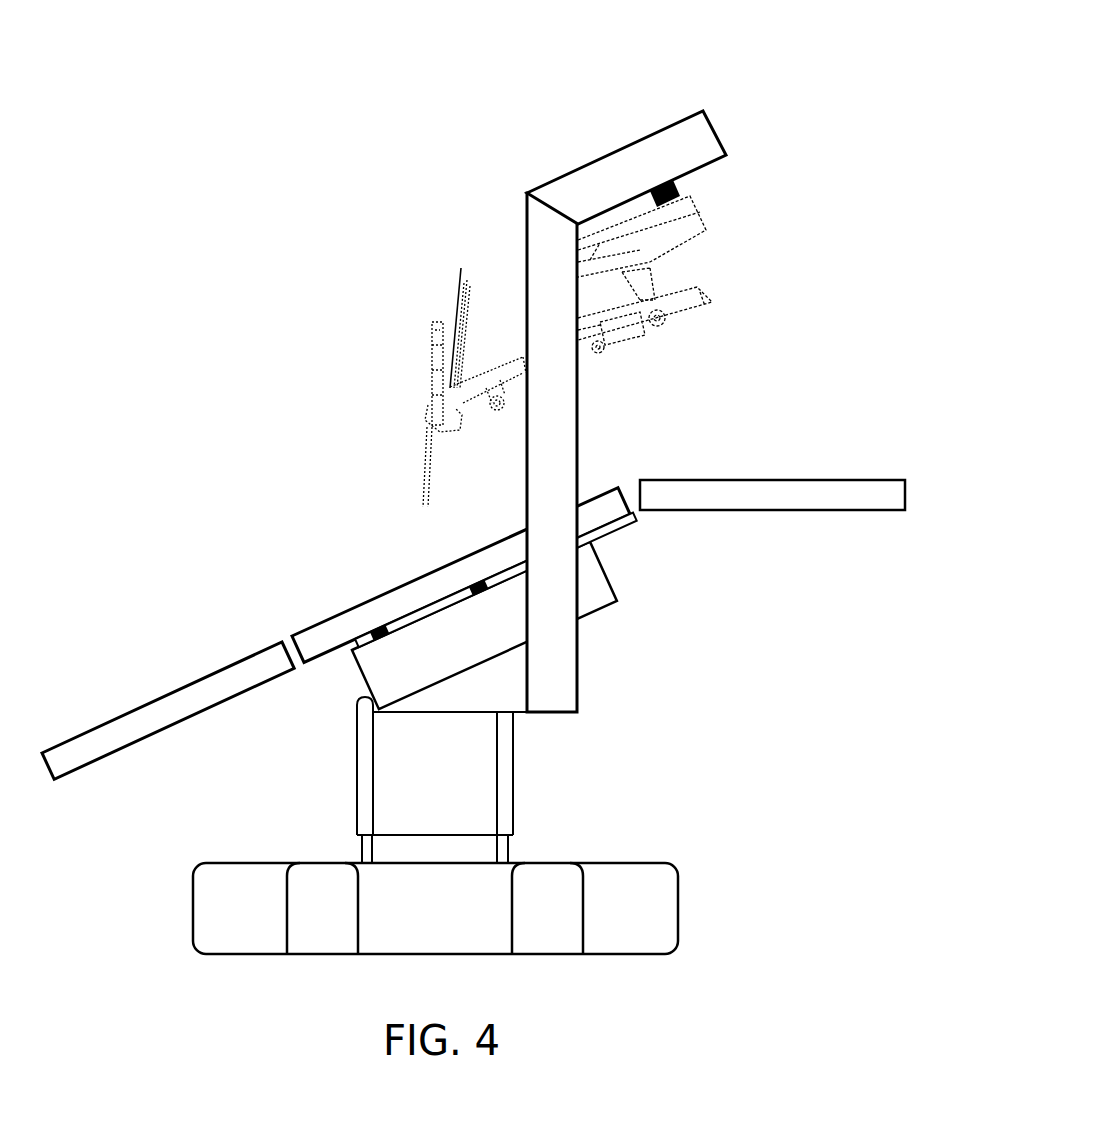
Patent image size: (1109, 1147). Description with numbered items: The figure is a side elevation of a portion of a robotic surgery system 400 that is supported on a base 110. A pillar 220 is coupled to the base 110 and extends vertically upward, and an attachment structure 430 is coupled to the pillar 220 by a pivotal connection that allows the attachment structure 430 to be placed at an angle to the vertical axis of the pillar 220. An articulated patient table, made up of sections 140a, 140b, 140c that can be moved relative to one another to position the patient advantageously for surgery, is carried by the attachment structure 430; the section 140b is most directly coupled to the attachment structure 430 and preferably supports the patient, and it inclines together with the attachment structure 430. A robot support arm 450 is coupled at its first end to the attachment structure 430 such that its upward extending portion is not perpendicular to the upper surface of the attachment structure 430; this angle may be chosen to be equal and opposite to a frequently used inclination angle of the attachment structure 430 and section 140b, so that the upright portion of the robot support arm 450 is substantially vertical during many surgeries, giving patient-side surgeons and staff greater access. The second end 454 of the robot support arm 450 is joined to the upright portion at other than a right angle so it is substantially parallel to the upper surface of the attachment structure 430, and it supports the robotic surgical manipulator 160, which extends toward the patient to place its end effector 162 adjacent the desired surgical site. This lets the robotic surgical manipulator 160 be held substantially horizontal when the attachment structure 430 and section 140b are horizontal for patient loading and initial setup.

The robotic surgery system 400 is at (208, 338).
The base 110 is at (238, 862).
The pillar 220 is at (355, 813).
The section of patient table 140a is at (160, 695).
The section of patient table 140b is at (410, 578).
The section of patient table 140c is at (773, 480).
The attachment structure 430 is at (606, 570).
The robot support arm 450 is at (578, 468).
The second end of robot support arm 454 is at (692, 112).
The robotic surgical manipulator 160 is at (410, 336).
The end effector 162 is at (423, 507).